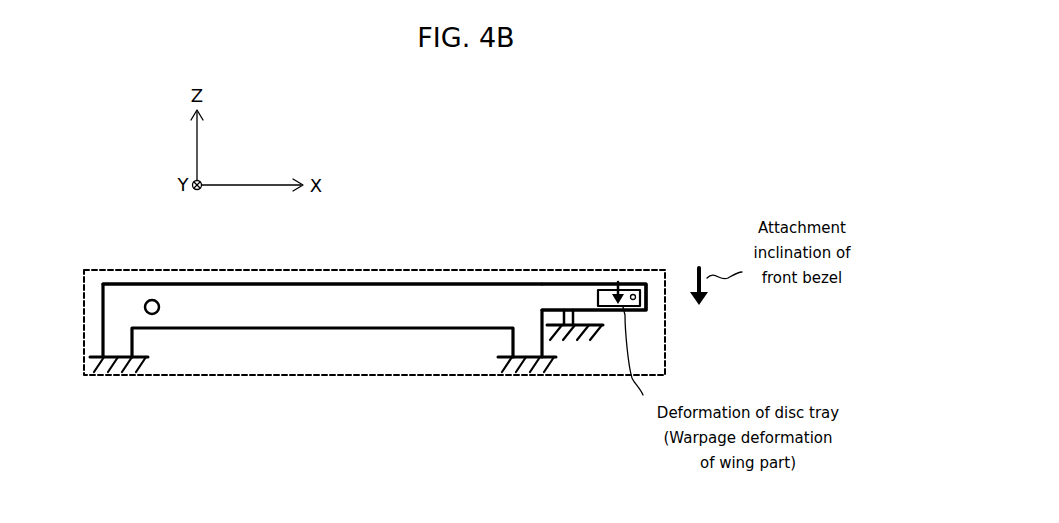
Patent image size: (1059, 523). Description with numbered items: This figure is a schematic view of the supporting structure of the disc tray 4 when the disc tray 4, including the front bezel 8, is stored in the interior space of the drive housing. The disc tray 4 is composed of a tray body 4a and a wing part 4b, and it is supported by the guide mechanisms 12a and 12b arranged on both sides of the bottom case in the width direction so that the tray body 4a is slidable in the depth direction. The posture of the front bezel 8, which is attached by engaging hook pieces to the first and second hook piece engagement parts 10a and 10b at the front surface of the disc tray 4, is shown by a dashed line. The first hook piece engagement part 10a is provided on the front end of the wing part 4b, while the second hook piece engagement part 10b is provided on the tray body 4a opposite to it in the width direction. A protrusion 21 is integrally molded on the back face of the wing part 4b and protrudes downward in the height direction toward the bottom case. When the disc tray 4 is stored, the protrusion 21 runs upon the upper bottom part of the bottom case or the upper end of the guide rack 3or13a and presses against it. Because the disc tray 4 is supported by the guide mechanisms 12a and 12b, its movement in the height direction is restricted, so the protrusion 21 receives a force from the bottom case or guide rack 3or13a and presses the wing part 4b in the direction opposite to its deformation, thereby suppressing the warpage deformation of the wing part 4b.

The disc tray 4 is at (577, 188).
The tray body 4a is at (362, 284).
The wing part 4b is at (598, 284).
The front bezel 8 is at (308, 375).
The first hook piece engagement part 10a is at (634, 293).
The second hook piece engagement part 10b is at (150, 300).
The guide mechanism 12a is at (507, 350).
The guide mechanism 12b is at (140, 357).
The bottom case or guide rack 3or13a is at (577, 320).
The protrusion 21 is at (590, 342).